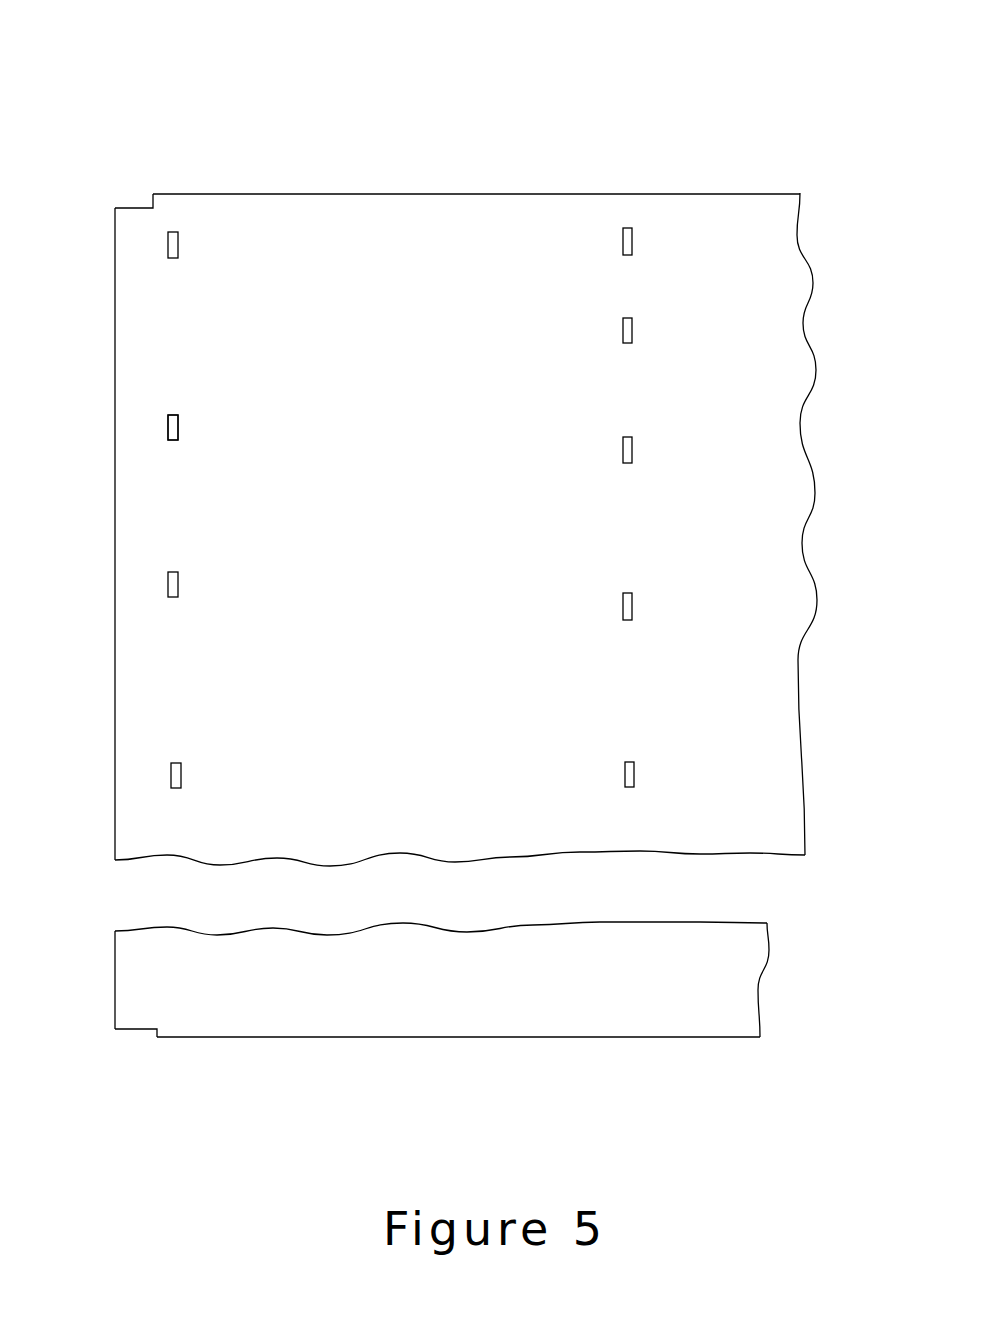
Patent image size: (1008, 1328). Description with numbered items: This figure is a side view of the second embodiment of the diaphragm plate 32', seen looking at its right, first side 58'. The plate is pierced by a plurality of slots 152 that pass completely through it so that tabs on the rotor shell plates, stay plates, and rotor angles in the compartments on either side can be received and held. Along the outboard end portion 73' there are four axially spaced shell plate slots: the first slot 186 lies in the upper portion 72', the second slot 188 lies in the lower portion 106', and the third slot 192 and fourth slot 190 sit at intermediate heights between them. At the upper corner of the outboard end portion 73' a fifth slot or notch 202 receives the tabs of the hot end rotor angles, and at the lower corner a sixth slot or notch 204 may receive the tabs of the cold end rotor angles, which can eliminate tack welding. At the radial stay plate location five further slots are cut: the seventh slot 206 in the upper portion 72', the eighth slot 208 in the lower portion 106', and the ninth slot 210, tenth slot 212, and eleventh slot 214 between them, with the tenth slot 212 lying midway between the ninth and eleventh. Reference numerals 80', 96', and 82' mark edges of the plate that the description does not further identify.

The diaphragm plate 32' is at (459, 556).
The upper portion 72' is at (459, 506).
The outboard end portion 73' is at (311, 170).
The top edge 80' is at (635, 171).
The left side edge 96' is at (78, 534).
The fifth slot or notch 202 is at (136, 208).
The right, first side 58' is at (452, 521).
The first slot 186 is at (179, 238).
The slots 152 is at (179, 421).
The third slot 192 is at (176, 441).
The fourth slot 190 is at (179, 578).
The second slot 188 is at (182, 769).
The seventh slot 206 is at (633, 234).
The ninth slot 210 is at (633, 324).
The tenth slot 212 is at (633, 443).
The eleventh slot 214 is at (633, 599).
The eighth slot 208 is at (635, 768).
The lower portion 106' is at (486, 1017).
The sixth slot or notch 204 is at (135, 1031).
The bottom edge 82' is at (458, 1074).